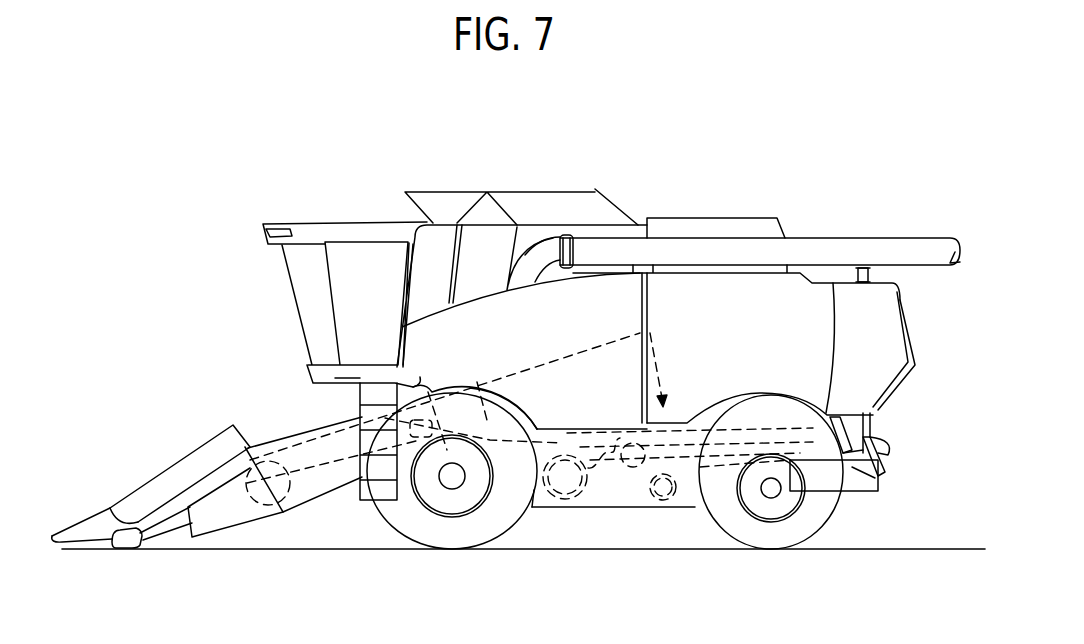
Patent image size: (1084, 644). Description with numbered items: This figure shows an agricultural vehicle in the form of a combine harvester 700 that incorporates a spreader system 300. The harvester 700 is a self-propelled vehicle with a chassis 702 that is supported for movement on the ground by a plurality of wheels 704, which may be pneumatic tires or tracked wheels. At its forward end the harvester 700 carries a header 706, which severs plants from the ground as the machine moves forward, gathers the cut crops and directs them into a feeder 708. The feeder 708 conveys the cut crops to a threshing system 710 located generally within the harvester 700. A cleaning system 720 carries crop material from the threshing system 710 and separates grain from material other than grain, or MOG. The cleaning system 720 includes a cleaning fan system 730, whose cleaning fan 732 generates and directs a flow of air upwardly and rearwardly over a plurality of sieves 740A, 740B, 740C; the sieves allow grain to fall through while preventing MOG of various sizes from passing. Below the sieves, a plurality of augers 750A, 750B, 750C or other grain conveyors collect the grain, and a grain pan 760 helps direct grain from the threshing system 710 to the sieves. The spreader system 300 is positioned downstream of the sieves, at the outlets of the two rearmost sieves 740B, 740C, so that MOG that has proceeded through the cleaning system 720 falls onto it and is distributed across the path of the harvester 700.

The combine harvester 700 is at (812, 162).
The chassis 702 is at (870, 413).
The wheels 704 is at (418, 530).
The header 706 is at (167, 483).
The feeder 708 is at (328, 480).
The threshing system 710 is at (556, 352).
The cleaning system 720 is at (673, 420).
The cleaning fan system 730 is at (565, 445).
The sieve 740A is at (680, 417).
The sieve 740B is at (753, 433).
The sieve 740C is at (757, 425).
The auger 750A is at (578, 492).
The auger 750B is at (636, 465).
The auger 750C is at (672, 488).
The grain pan 760 is at (505, 445).
The cleaning fan 732 is at (547, 510).
The spreader system 300 is at (882, 477).